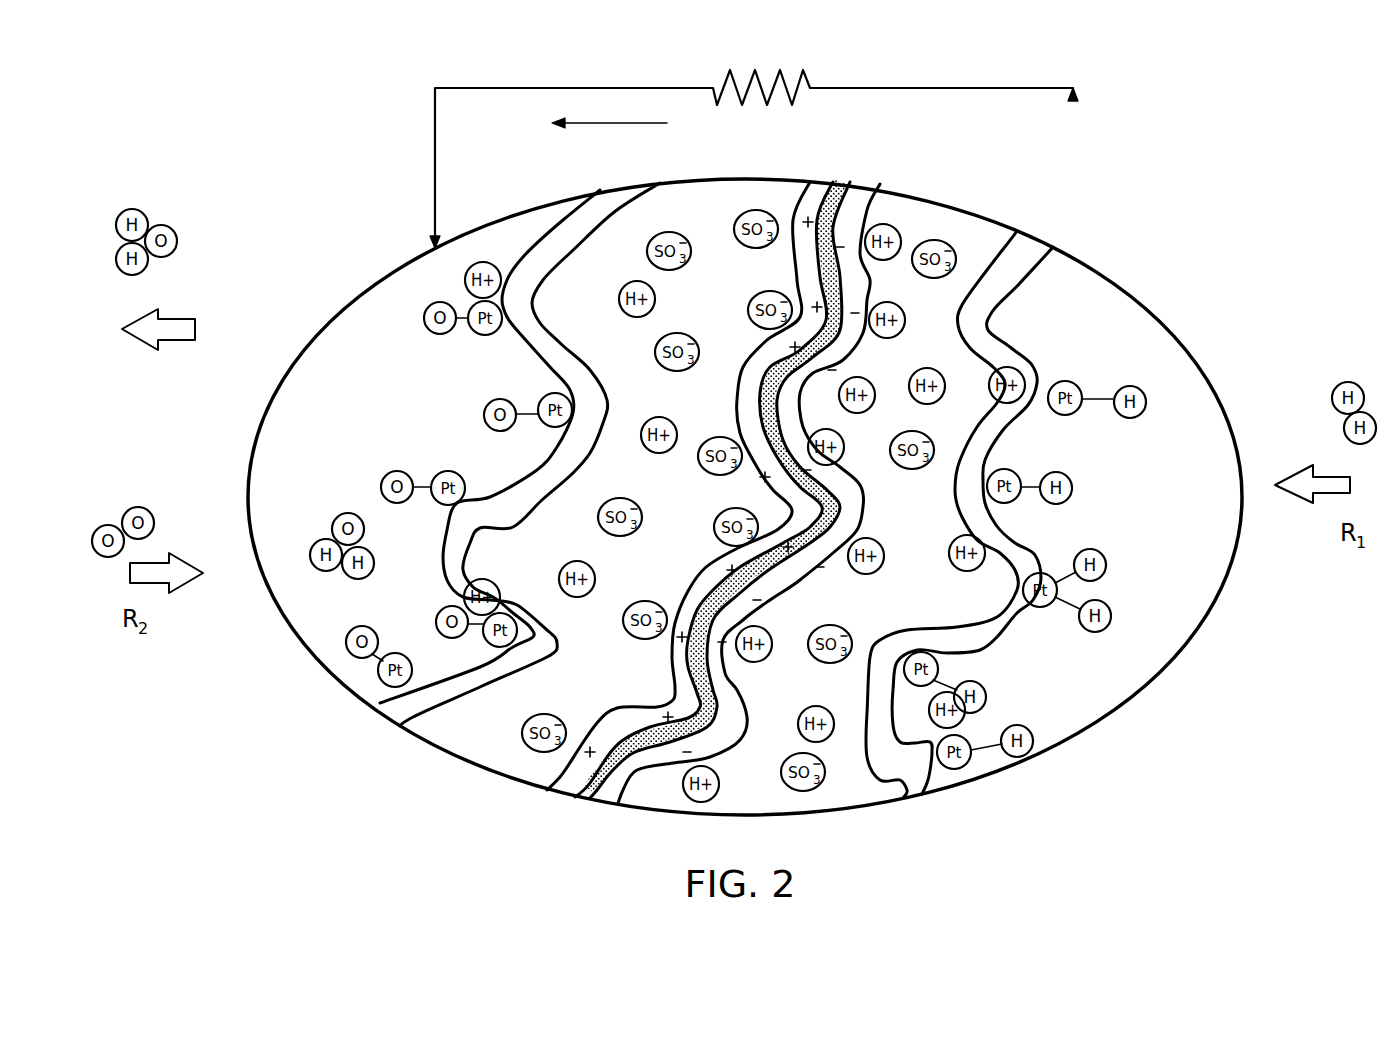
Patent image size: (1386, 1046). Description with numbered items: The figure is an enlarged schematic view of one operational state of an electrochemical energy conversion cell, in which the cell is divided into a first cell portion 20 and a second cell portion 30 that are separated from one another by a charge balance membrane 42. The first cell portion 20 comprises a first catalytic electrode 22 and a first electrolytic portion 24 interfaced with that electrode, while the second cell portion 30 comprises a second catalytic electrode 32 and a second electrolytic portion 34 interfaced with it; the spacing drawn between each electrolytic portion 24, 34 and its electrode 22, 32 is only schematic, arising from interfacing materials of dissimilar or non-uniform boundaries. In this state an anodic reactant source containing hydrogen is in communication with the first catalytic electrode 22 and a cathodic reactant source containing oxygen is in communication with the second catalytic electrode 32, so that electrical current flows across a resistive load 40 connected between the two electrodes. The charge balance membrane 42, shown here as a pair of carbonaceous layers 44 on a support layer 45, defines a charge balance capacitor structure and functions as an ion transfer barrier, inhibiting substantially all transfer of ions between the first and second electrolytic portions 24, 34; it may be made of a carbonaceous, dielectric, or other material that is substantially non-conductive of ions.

The first cell portion 20 is at (1172, 242).
The first catalytic electrode 22 is at (1181, 345).
The first electrolytic portion 24 is at (987, 230).
The second cell portion 30 is at (352, 236).
The second catalytic electrode 32 is at (348, 323).
The second electrolytic portion 34 is at (728, 188).
The resistive load 40 is at (780, 72).
The charge balance membrane 42 is at (723, 506).
The carbonaceous layers 44 is at (845, 186).
The support layer 45 is at (820, 185).